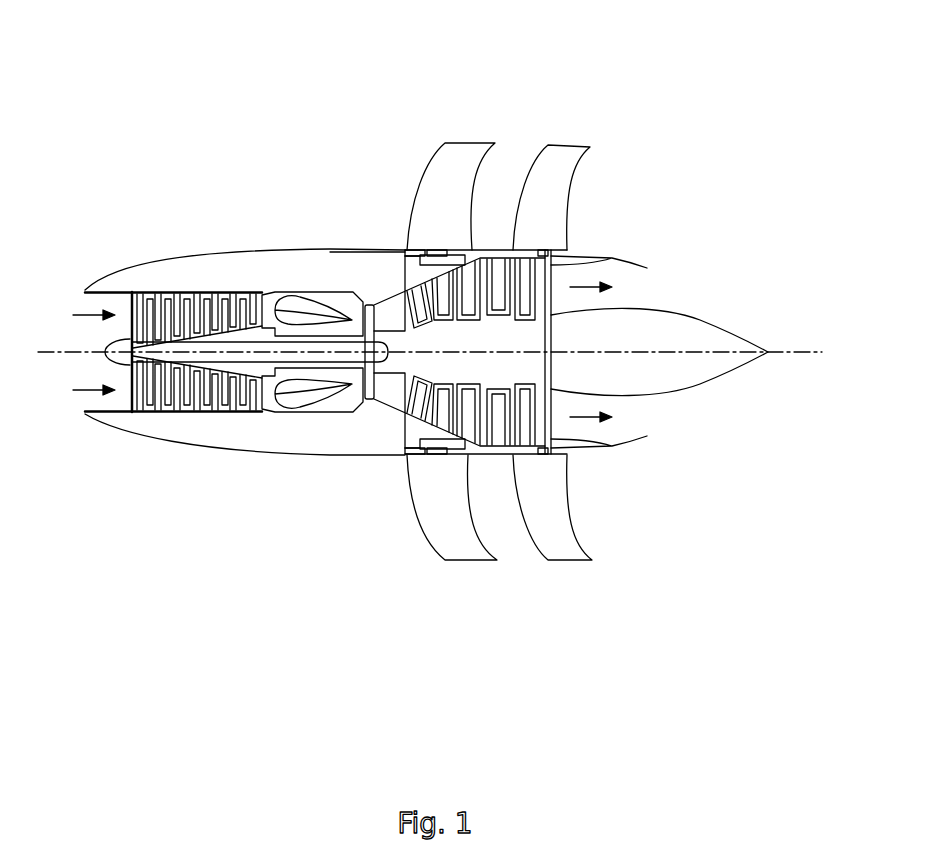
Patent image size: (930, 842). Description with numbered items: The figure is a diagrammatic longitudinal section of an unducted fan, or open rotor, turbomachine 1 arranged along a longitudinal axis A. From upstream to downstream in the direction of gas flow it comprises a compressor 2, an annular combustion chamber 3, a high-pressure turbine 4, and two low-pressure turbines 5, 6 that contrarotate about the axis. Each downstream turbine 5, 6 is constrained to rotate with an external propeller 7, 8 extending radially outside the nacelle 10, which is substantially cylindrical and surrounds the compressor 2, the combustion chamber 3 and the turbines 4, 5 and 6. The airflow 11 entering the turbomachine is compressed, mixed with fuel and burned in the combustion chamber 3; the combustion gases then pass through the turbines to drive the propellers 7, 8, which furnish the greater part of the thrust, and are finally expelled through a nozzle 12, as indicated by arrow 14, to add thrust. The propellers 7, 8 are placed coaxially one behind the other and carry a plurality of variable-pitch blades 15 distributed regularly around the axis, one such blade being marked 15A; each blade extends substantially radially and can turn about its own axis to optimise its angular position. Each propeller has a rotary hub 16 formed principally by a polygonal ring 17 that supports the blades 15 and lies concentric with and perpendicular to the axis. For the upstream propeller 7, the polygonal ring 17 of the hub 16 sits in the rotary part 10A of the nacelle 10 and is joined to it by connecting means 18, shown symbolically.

The turbomachine 1 is at (222, 106).
The compressor 2 is at (150, 283).
The annular combustion chamber 3 is at (305, 420).
The high-pressure turbine 4 is at (366, 420).
The low-pressure turbine 5 is at (480, 250).
The low-pressure turbine 6 is at (488, 347).
The propeller 7 is at (478, 574).
The propeller 8 is at (579, 574).
The nacelle 10 is at (137, 437).
The rotary part of the nacelle 10A is at (468, 453).
The airflow 11 is at (83, 316).
The nozzle 12 is at (627, 260).
The arrow 14 is at (597, 418).
The blades 15 is at (560, 153).
The first propeller blade 15A is at (435, 250).
The rotary hub 16 is at (404, 457).
The polygonal ring 17 is at (413, 257).
The connecting means 18 is at (372, 255).